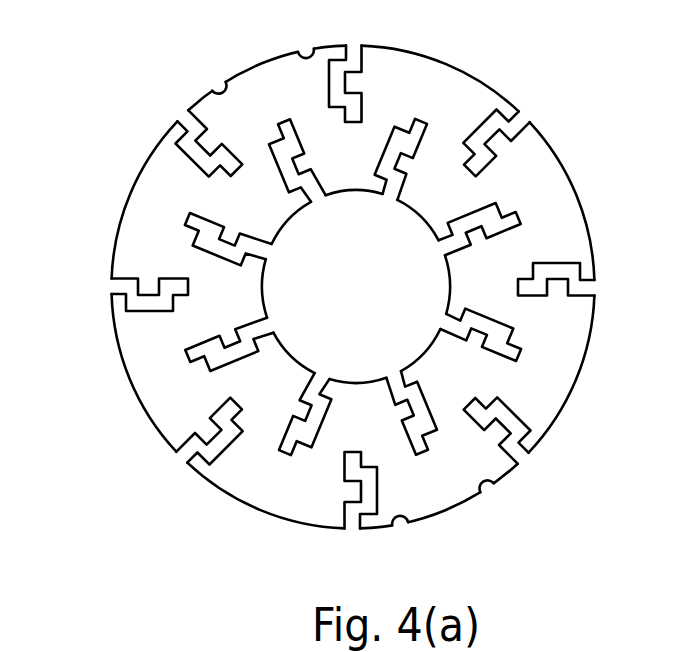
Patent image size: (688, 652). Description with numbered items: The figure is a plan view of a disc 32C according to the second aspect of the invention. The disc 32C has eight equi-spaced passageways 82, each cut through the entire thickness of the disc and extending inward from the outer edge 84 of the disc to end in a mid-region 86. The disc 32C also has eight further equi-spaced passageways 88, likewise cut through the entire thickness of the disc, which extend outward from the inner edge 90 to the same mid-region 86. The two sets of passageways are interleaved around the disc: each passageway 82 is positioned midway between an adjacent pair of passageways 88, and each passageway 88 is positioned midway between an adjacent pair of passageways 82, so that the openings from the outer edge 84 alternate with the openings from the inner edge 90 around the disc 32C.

The disc 32C is at (346, 295).
The passageways 82 is at (341, 71).
The outer edge 84 is at (255, 65).
The mid-region 86 is at (215, 215).
The passageways 88 is at (421, 122).
The inner edge 90 is at (358, 381).